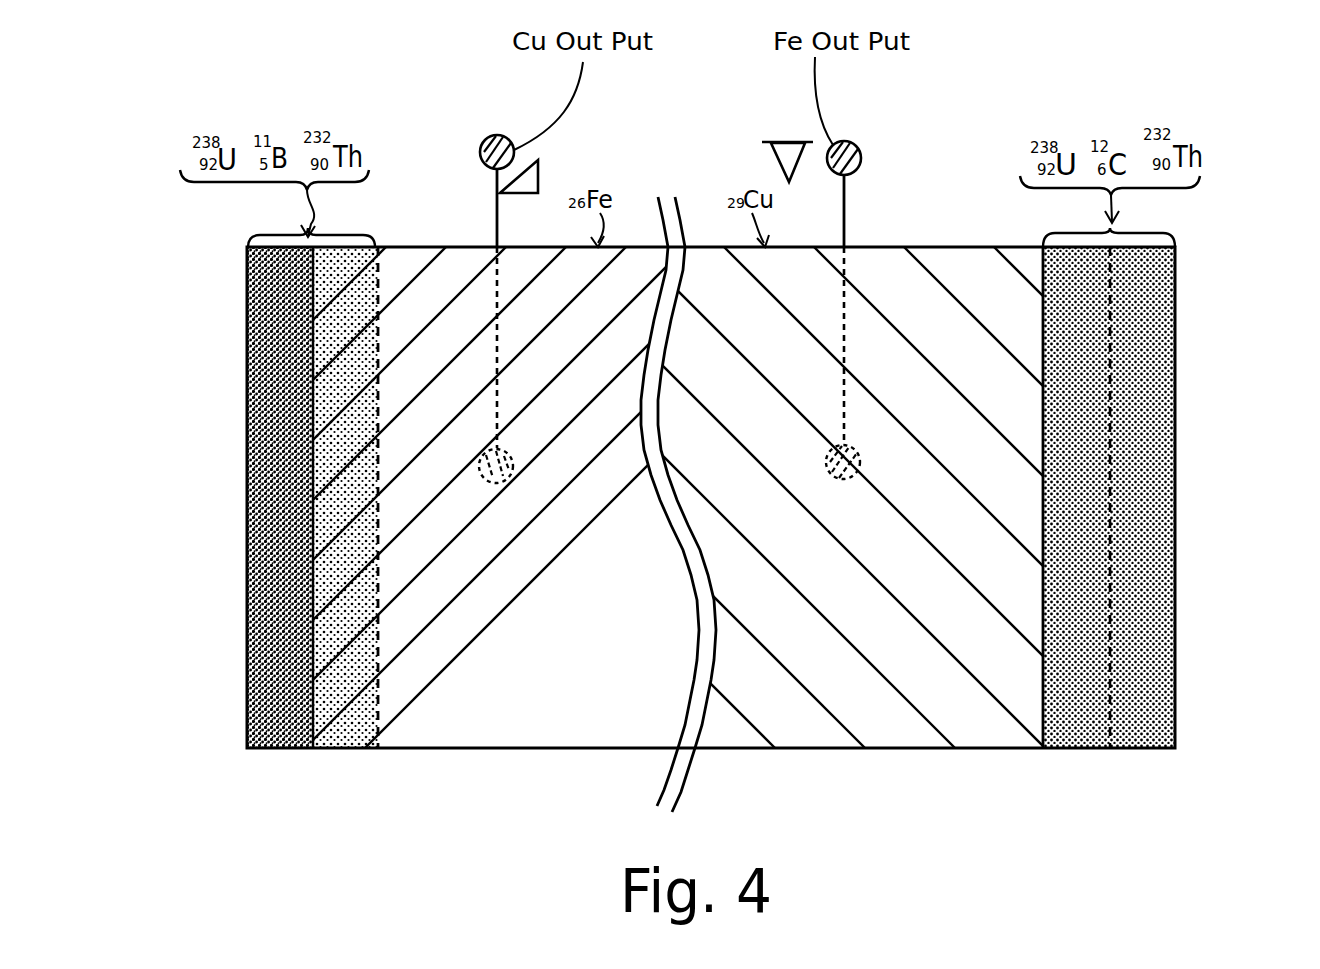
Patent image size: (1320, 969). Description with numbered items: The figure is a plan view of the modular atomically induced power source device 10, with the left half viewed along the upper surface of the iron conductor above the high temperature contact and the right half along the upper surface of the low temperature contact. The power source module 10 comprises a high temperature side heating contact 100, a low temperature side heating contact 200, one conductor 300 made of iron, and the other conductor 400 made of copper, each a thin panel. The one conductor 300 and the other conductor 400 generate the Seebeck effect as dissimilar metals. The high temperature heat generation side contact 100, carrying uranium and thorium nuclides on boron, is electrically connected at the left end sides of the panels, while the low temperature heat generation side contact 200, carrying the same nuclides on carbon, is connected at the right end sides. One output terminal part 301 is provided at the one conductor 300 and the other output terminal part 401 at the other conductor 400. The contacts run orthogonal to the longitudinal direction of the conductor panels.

The high temperature side heating contact 100 is at (236, 378).
The low temperature side heating contact 200 is at (1188, 286).
The one conductor 300 is at (421, 240).
The other conductor 400 is at (954, 242).
The other output terminal part 401 is at (487, 137).
The one output terminal part 301 is at (848, 142).
The atomically induced power generation type power source device 10 is at (661, 170).